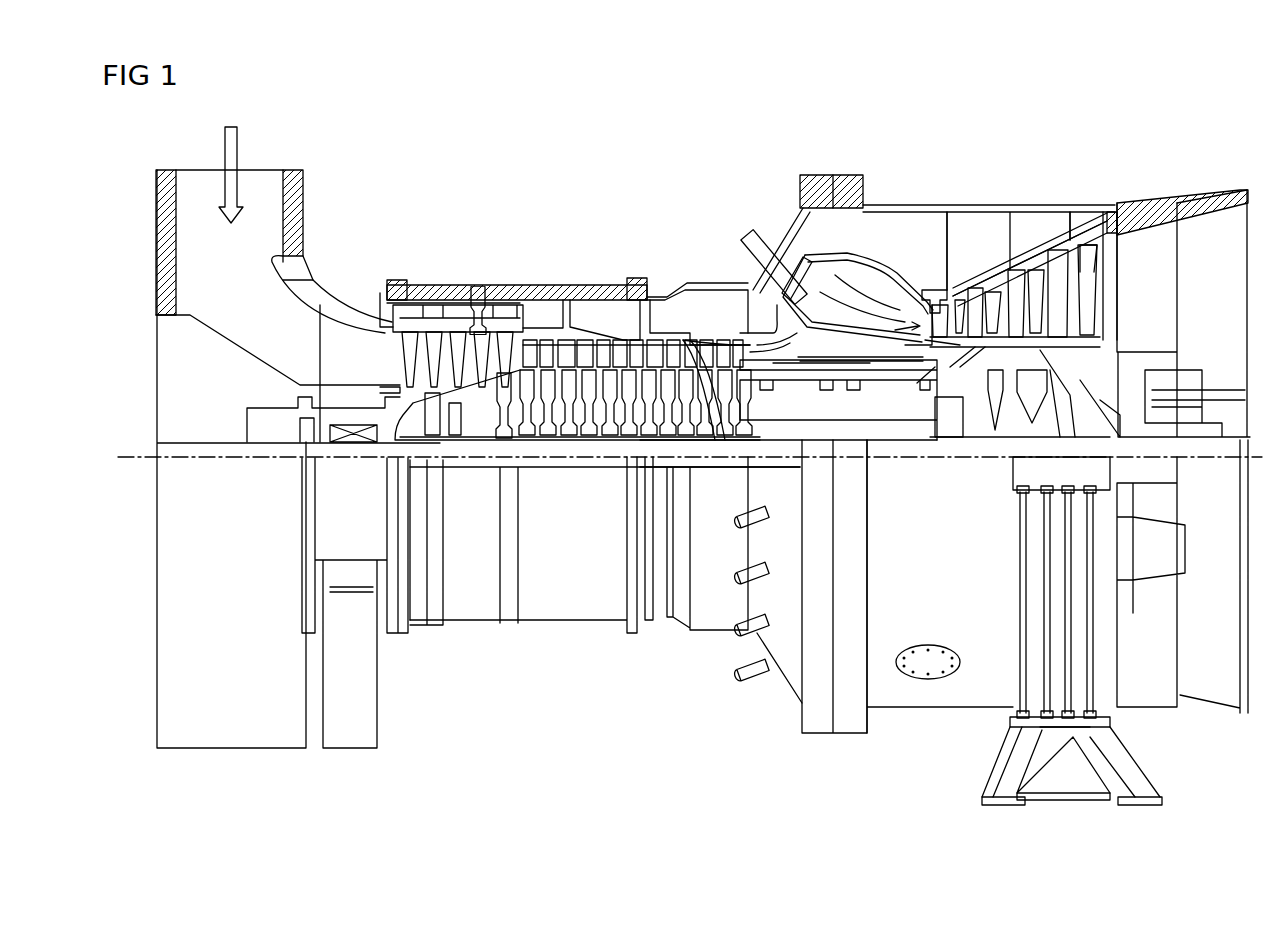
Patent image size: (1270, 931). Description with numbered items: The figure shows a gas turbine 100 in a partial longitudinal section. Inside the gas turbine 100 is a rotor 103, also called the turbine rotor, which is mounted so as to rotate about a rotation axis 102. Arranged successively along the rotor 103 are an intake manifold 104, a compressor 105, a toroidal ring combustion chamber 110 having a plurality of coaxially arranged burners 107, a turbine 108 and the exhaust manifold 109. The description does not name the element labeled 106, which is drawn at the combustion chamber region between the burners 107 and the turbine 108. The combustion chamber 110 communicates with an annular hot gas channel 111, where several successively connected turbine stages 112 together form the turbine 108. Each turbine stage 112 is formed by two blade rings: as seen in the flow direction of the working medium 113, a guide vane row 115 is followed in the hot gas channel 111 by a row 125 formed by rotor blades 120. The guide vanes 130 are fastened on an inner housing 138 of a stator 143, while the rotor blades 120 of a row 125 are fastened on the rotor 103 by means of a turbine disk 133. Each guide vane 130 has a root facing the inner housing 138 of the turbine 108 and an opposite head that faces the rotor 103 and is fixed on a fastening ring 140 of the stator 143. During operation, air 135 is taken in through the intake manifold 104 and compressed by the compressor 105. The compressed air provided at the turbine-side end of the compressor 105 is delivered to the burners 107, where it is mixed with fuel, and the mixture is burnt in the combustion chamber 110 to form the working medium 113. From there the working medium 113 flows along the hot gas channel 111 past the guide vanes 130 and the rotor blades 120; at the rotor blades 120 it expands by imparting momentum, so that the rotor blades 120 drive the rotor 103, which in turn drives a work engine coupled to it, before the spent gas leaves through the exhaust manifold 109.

The gas turbine 100 is at (580, 172).
The rotation axis 102 is at (132, 455).
The rotor 103 is at (803, 440).
The intake manifold 104 is at (295, 208).
The compressor 105 is at (472, 262).
The combustion chamber 106 is at (893, 288).
The burner 107 is at (750, 246).
The turbine 108 is at (928, 160).
The exhaust manifold 109 is at (1158, 210).
The combustion chamber 110 is at (793, 228).
The hot gas channel 111 is at (1093, 272).
The turbine stage 112 is at (1061, 160).
The working medium 113 is at (827, 275).
The guide vane row 115 is at (1037, 228).
The rotor blade 120 is at (1017, 323).
The row of rotor blades 125 is at (1087, 218).
The guide vane 130 is at (1037, 303).
The turbine disk 133 is at (1070, 413).
The air 135 is at (232, 150).
The inner housing 138 is at (977, 228).
The fastening ring 140 is at (920, 383).
The stator 143 is at (903, 208).